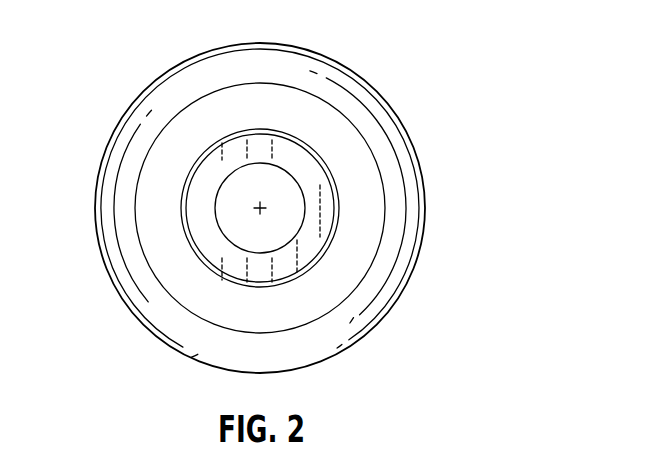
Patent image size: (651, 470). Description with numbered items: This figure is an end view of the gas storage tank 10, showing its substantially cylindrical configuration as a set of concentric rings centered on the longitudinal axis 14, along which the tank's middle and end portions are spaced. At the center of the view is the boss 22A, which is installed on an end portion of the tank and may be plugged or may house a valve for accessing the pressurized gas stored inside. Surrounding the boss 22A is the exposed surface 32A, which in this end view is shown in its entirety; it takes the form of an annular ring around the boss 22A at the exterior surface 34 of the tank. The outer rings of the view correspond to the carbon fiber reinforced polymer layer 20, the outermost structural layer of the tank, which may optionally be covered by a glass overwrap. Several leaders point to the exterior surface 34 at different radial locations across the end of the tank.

The gas storage tank 10 is at (416, 62).
The carbon fiber reinforced polymer layer 20 is at (167, 98).
The longitudinal axis 14 is at (250, 201).
The boss 22A is at (291, 156).
The exterior surface 34 is at (312, 185).
The exposed surface 32A is at (325, 261).